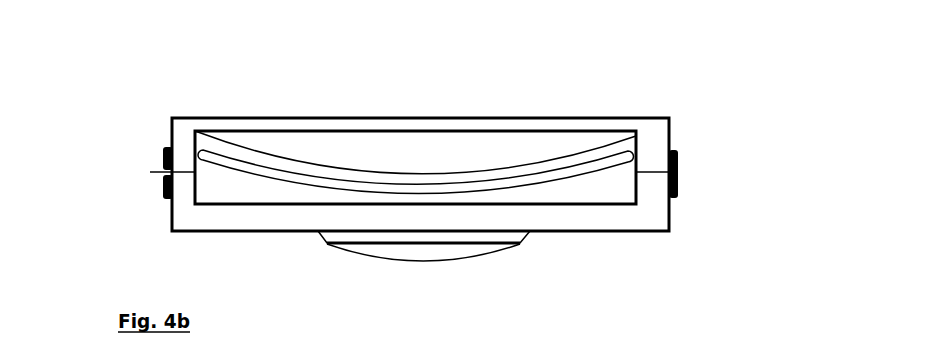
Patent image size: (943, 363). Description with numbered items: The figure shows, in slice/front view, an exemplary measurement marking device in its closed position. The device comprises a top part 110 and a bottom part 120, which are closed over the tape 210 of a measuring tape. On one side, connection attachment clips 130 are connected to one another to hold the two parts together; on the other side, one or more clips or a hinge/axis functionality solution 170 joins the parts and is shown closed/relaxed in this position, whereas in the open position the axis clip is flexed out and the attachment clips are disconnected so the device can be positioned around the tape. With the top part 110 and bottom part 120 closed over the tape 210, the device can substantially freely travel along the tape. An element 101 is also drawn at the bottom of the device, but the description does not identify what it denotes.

The optical element 101 is at (473, 263).
The curved carrier plate 110 is at (428, 128).
The housing frame 120 is at (605, 235).
The electrical contact pads 130 is at (150, 172).
The electrical contact 170 is at (685, 192).
The elongated slot 210 is at (235, 160).